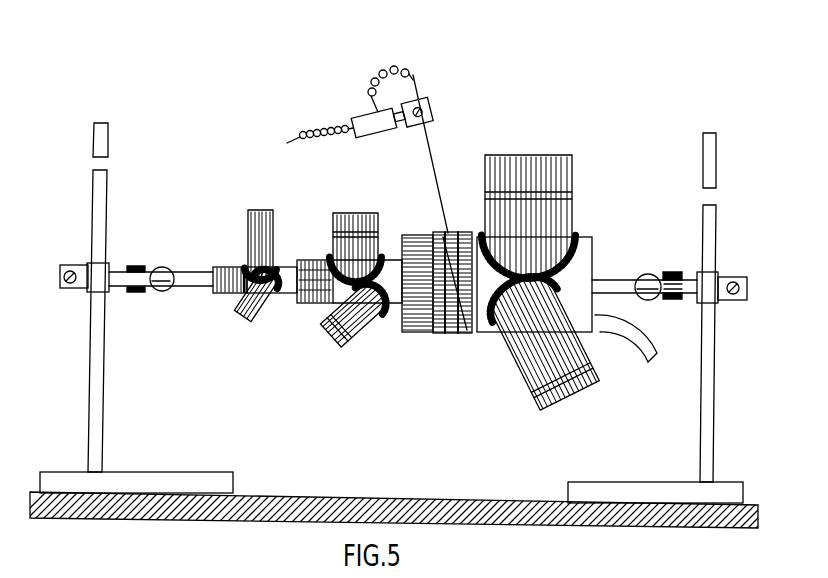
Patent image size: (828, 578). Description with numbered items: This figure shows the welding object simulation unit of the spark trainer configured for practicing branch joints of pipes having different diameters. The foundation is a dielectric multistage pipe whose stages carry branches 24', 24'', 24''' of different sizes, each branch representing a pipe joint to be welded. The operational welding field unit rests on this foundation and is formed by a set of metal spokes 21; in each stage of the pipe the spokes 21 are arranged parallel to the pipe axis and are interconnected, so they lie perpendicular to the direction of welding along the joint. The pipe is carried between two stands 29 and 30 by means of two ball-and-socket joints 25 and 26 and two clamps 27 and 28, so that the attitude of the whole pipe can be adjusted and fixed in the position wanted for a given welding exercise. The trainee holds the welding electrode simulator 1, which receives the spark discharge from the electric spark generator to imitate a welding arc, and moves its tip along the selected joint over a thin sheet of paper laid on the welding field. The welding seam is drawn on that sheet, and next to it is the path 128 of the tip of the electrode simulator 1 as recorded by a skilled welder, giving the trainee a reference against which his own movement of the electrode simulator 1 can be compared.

The welding electrode simulator 1 is at (430, 131).
The metal spokes 21 is at (438, 327).
The branch of the multistage pipe 24' is at (567, 283).
The branch of the multistage pipe 24'' is at (349, 292).
The branch of the multistage pipe 24''' is at (255, 284).
The ball-and-socket joint 25 is at (652, 294).
The ball-and-socket joint 26 is at (162, 286).
The clamp 27 is at (736, 304).
The clamp 28 is at (78, 267).
The stand 29 is at (703, 215).
The stand 30 is at (95, 183).
The path of the electrode simulator tip 128 is at (462, 335).